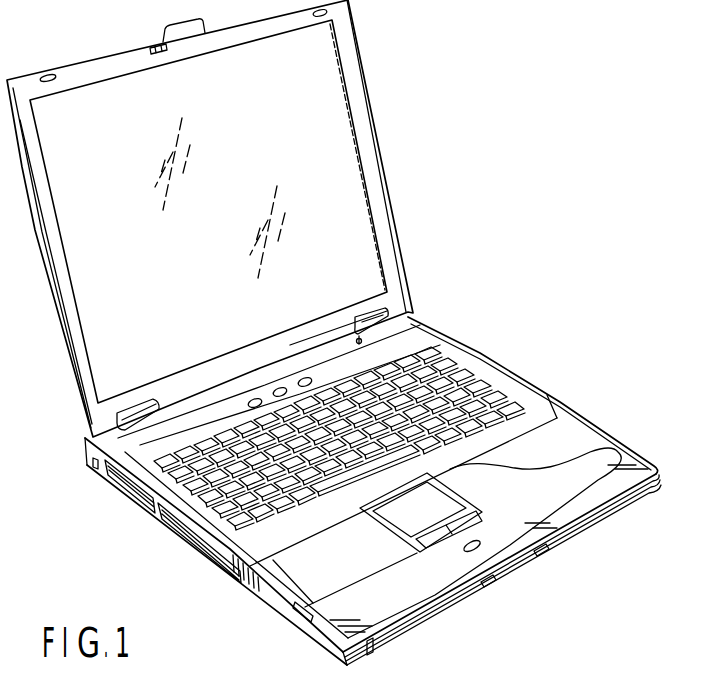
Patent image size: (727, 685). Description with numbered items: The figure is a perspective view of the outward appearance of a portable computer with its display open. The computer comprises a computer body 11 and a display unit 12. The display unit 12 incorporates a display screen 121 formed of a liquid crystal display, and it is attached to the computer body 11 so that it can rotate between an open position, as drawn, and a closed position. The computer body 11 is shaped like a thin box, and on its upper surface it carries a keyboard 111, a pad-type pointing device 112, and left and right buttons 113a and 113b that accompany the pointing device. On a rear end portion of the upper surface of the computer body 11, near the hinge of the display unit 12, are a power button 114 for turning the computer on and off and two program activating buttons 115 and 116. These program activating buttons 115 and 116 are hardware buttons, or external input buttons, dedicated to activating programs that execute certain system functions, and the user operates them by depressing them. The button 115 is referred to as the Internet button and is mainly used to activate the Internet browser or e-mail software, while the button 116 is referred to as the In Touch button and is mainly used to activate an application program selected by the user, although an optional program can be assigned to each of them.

The computer body 11 is at (270, 600).
The display unit 12 is at (377, 177).
The keyboard 111 is at (507, 373).
The pad-type pointing device 112 is at (518, 522).
The left button 113a is at (432, 545).
The right button 113b is at (495, 520).
The power button 114 is at (245, 400).
The Internet button 115 is at (283, 391).
The In Touch button 116 is at (418, 325).
The display screen 121 is at (323, 72).